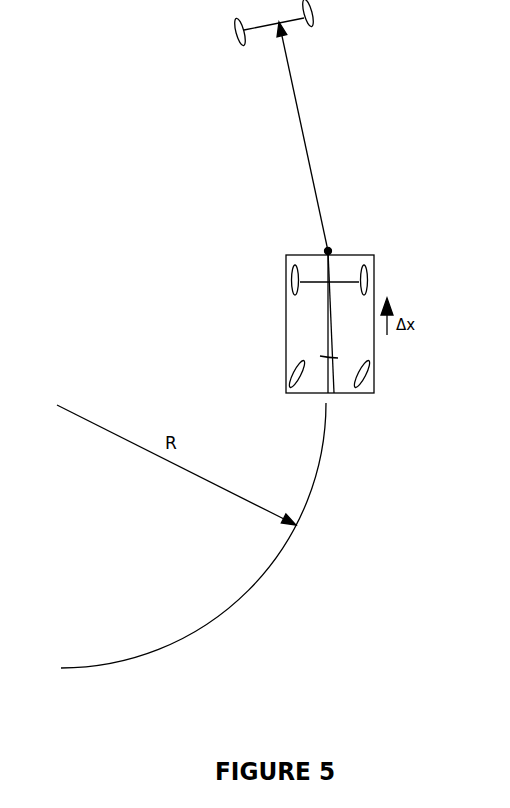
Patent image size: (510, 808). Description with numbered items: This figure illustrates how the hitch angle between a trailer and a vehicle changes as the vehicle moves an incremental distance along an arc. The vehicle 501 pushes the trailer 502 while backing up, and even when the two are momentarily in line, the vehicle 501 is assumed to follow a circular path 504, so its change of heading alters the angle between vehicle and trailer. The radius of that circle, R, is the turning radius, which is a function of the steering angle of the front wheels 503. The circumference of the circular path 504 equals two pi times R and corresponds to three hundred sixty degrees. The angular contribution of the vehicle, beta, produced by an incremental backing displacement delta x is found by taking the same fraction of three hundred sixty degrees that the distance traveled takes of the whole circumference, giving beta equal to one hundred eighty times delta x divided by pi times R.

The vehicle 501 is at (362, 250).
The trailer 502 is at (307, 117).
The front wheels 503 is at (368, 380).
The circular path 504 is at (235, 617).